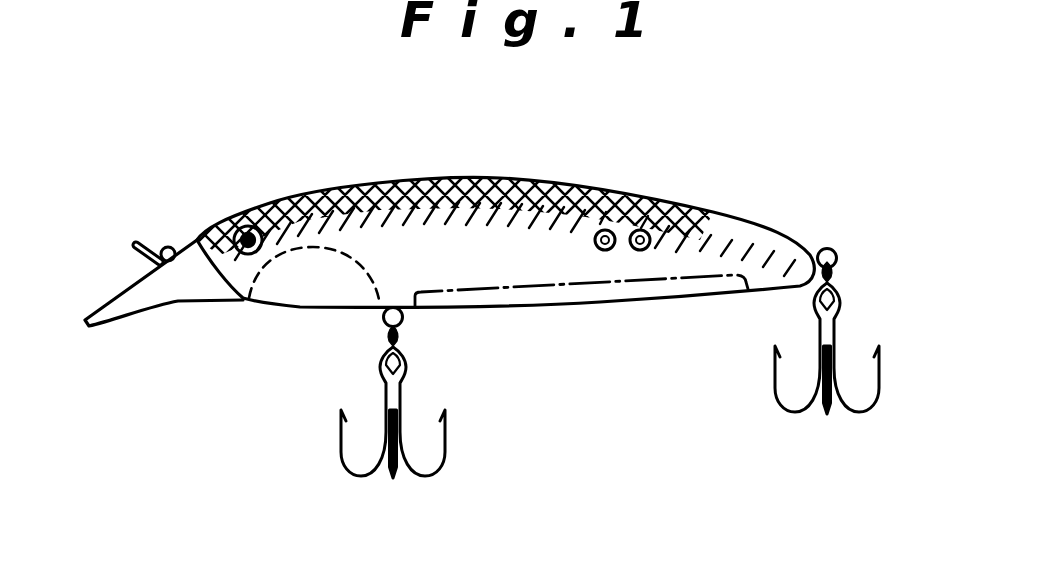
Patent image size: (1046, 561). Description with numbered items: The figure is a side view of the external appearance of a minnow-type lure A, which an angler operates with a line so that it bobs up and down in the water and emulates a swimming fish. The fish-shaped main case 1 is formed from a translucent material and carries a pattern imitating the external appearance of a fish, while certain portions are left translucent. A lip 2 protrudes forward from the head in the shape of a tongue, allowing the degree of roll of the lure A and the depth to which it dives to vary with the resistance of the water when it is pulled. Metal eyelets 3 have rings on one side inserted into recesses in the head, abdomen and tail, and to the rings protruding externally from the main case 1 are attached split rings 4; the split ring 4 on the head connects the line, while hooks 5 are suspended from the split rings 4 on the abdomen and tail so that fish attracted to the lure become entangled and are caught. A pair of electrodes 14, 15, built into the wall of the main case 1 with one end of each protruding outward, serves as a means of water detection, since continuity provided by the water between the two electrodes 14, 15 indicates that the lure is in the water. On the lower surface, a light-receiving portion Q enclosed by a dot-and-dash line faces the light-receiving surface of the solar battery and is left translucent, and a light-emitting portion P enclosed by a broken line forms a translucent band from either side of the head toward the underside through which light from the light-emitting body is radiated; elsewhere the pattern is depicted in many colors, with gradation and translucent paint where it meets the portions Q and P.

The lure A is at (844, 101).
The main case 1 is at (432, 265).
The lip 2 is at (124, 308).
The metal eyelet 3 is at (168, 246).
The split ring 4 is at (132, 243).
The hook 5 is at (448, 458).
The electrode 14 is at (642, 229).
The electrode 15 is at (610, 229).
The light-emitting portion P is at (298, 294).
The light-receiving portion Q is at (609, 294).